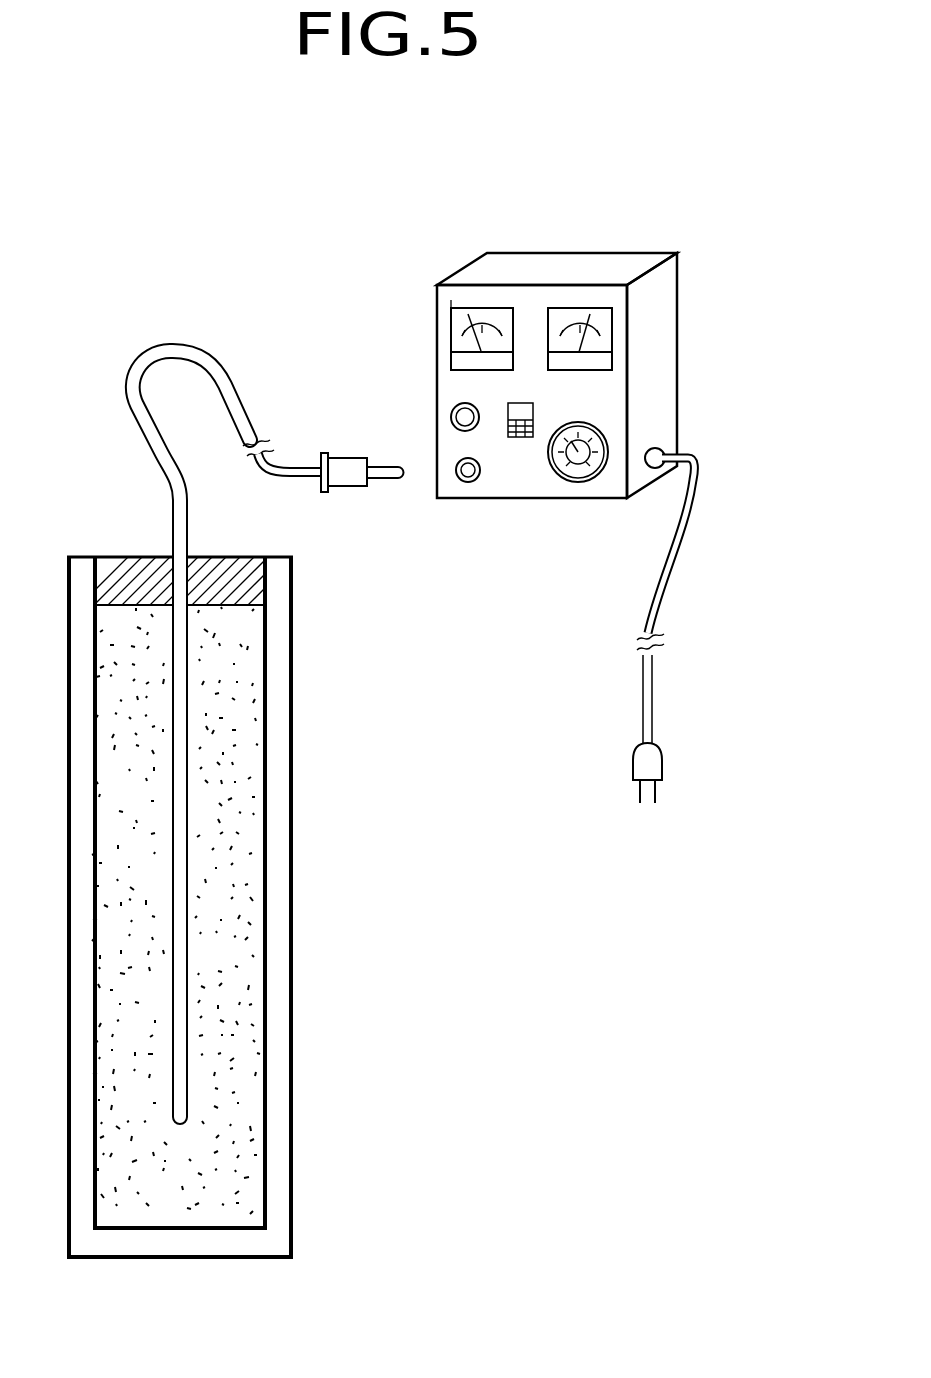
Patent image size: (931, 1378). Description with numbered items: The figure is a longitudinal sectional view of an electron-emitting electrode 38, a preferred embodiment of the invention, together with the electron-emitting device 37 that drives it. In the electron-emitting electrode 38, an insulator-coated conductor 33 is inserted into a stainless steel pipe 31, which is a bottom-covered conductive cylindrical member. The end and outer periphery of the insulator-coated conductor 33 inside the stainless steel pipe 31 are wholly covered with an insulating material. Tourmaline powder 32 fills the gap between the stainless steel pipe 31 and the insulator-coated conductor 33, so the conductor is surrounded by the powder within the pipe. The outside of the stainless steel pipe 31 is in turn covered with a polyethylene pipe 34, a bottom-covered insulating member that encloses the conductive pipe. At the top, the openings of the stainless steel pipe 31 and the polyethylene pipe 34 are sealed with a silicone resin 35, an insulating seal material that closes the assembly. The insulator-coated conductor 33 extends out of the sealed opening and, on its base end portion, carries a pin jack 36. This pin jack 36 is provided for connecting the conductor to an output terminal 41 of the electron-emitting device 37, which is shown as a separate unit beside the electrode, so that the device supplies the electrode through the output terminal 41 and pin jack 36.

The stainless steel pipe 31 is at (250, 966).
The tourmaline powder 32 is at (227, 1170).
The insulator-coated conductor 33 is at (188, 1050).
The polyethylene pipe 34 is at (293, 758).
The silicone resin 35 is at (208, 553).
The pin jack 36 is at (383, 465).
The electron-emitting device 37 is at (532, 488).
The electron-emitting electrode 38 is at (293, 842).
The output terminal 41 is at (465, 483).